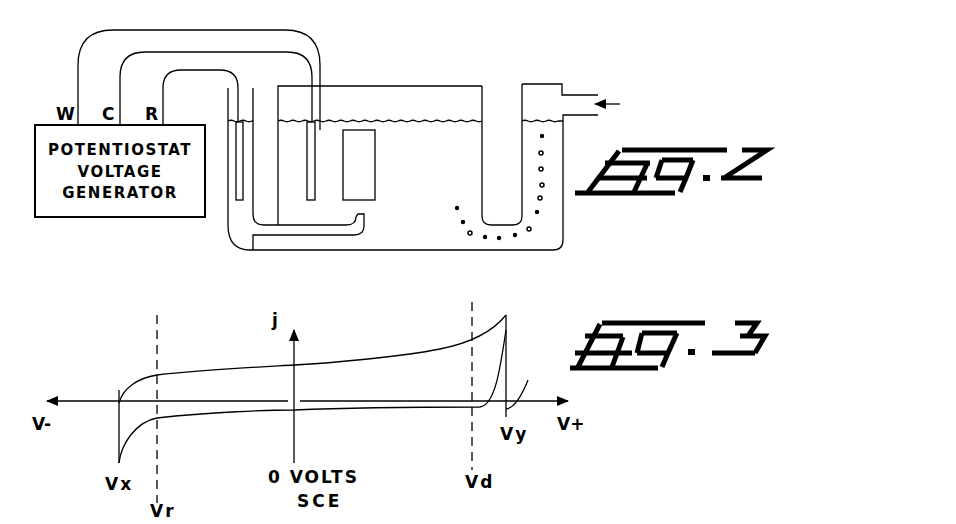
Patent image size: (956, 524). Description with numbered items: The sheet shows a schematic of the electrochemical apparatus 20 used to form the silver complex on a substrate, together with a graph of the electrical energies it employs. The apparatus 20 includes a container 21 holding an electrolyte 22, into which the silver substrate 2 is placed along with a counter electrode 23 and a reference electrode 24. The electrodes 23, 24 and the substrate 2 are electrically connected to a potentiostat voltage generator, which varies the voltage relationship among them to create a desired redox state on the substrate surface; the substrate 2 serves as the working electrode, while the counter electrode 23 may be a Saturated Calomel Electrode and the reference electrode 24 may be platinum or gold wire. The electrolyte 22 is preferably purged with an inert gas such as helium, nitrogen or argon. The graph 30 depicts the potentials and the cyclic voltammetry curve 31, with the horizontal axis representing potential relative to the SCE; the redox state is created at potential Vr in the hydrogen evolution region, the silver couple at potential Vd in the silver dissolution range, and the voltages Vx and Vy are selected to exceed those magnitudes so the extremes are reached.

In FIG. 2, the apparatus 20 is at (445, 64).
In FIG. 2, the container 21 is at (483, 97).
In FIG. 2, the electrolyte 22 is at (467, 173).
In FIG. 2, the counter electrode 23 is at (315, 148).
In FIG. 2, the substrate 2 is at (375, 158).
In FIG. 2, the reference electrode 24 is at (228, 197).
In FIG. 3, the graph 30 is at (386, 338).
In FIG. 3, the cyclic voltammetry curve 31 is at (337, 358).